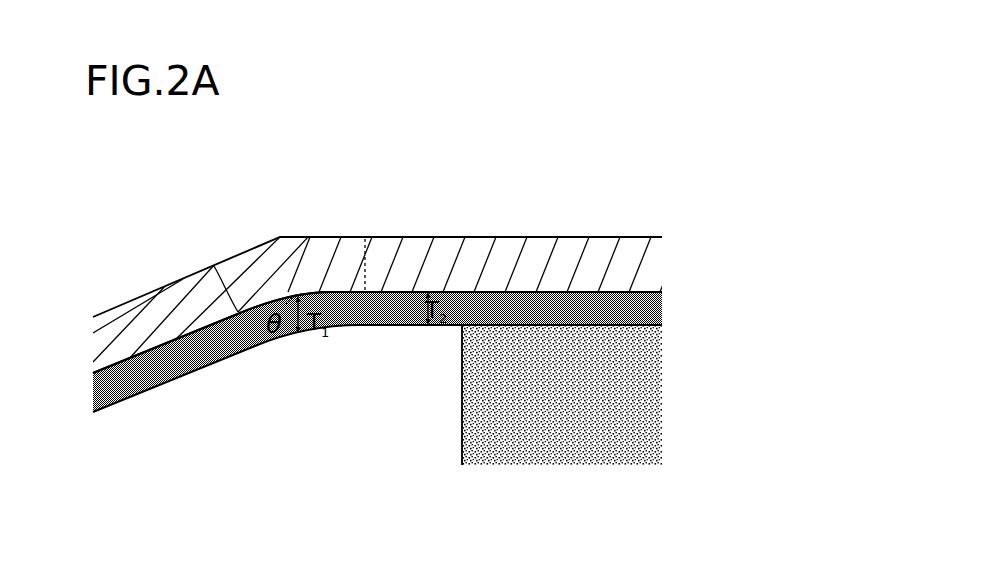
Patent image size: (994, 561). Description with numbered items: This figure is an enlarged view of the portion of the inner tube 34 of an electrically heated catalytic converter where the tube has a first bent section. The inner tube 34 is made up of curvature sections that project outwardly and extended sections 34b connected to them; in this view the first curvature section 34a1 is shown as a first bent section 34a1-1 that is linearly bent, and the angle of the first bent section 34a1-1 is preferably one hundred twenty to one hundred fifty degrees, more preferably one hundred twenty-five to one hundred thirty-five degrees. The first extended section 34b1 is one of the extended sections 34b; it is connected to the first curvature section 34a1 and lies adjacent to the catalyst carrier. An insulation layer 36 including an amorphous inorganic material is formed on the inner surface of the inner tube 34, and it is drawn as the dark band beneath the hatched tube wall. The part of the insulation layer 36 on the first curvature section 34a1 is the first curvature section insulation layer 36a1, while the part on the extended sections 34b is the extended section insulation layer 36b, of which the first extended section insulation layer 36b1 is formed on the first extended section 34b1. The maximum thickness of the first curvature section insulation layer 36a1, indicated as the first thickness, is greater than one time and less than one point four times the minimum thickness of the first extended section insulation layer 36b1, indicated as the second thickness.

The inner tube 34 is at (555, 158).
The extended section 34b is at (150, 308).
The first bent section 34a1-1 is at (270, 229).
The first curvature section 34a1 is at (283, 257).
The first extended section 34b1 is at (494, 253).
The insulation layer 36 is at (377, 394).
The extended section insulation layer 36b is at (163, 383).
The first curvature section insulation layer 36a1 is at (350, 330).
The first extended section insulation layer 36b1 is at (514, 370).